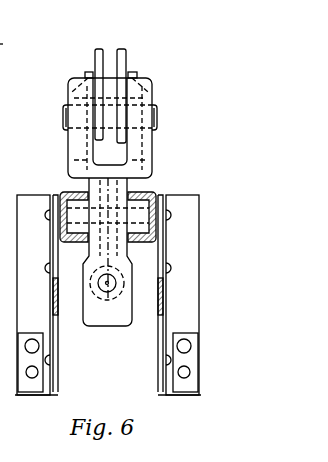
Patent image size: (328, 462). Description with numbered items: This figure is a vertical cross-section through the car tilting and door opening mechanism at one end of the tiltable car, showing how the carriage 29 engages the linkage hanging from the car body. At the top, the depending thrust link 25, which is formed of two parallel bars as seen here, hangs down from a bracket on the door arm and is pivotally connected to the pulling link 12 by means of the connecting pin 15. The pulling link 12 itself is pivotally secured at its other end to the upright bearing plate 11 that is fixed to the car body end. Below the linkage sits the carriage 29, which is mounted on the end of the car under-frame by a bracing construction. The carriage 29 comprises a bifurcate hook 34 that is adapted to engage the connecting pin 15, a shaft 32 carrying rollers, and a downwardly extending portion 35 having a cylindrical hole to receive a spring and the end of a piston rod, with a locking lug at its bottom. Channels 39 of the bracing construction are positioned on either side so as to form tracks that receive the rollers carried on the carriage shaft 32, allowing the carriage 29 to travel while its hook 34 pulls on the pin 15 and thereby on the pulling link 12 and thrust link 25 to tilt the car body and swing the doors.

The upright bearing plate 11 is at (10, 38).
The pulling link 12 is at (112, 102).
The connecting pin 15 is at (158, 118).
The depending thrust link 25 is at (121, 62).
The carriage 29 is at (140, 153).
The carriage shaft 32 is at (138, 212).
The bifurcate hook 34 is at (128, 92).
The downwardly extending portion 35 is at (93, 312).
The channel 39 is at (65, 193).